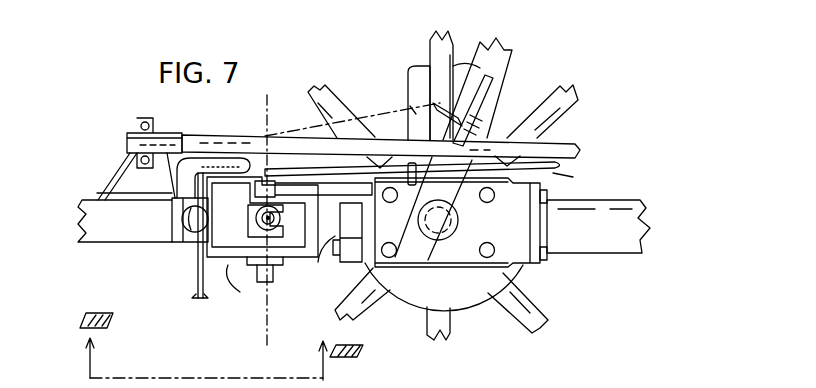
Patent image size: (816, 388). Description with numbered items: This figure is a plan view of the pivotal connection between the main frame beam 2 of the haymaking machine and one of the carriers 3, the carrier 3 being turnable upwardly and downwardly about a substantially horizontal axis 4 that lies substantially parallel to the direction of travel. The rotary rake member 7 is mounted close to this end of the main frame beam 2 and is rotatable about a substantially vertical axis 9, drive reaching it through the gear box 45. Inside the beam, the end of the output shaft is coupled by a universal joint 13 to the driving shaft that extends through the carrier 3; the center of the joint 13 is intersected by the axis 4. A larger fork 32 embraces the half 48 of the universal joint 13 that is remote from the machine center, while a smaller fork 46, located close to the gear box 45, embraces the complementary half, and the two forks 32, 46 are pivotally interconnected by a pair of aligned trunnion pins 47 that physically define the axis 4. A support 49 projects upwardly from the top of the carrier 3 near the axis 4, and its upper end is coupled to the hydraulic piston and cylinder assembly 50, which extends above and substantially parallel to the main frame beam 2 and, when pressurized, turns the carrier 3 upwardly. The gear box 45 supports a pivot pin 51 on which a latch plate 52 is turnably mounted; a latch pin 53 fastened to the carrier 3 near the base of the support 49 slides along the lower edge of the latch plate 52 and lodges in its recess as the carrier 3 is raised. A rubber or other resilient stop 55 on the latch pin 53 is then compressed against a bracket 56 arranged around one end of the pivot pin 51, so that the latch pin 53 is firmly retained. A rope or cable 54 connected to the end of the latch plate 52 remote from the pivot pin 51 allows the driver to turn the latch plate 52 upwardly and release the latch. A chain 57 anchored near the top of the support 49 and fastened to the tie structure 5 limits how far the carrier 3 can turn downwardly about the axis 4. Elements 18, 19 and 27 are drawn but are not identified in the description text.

The main frame beam 2 is at (609, 253).
The carrier 3 is at (100, 247).
The substantially horizontal axis 4 is at (267, 325).
The tie structure 5 is at (514, 50).
The rake member 7 is at (528, 303).
The substantially vertical axis 9 is at (456, 225).
The universal joint 13 is at (250, 206).
The post 18 is at (424, 66).
The post 19 is at (518, 310).
The support foot 27 is at (190, 294).
The larger fork 32 is at (200, 260).
The gear box 45 is at (408, 292).
The smaller fork 46 is at (281, 275).
The trunnion pin 47 is at (278, 157).
The half of the universal joint 48 is at (232, 276).
The support 49 is at (119, 156).
The hydraulic piston and cylinder assembly 50 is at (577, 150).
The pivot pin 51 is at (338, 260).
The latch plate 52 is at (300, 186).
The latch pin 53 is at (205, 155).
The rope or cable 54 is at (431, 177).
The resilient stop 55 is at (181, 218).
The bracket 56 is at (312, 284).
The chain 57 is at (390, 112).